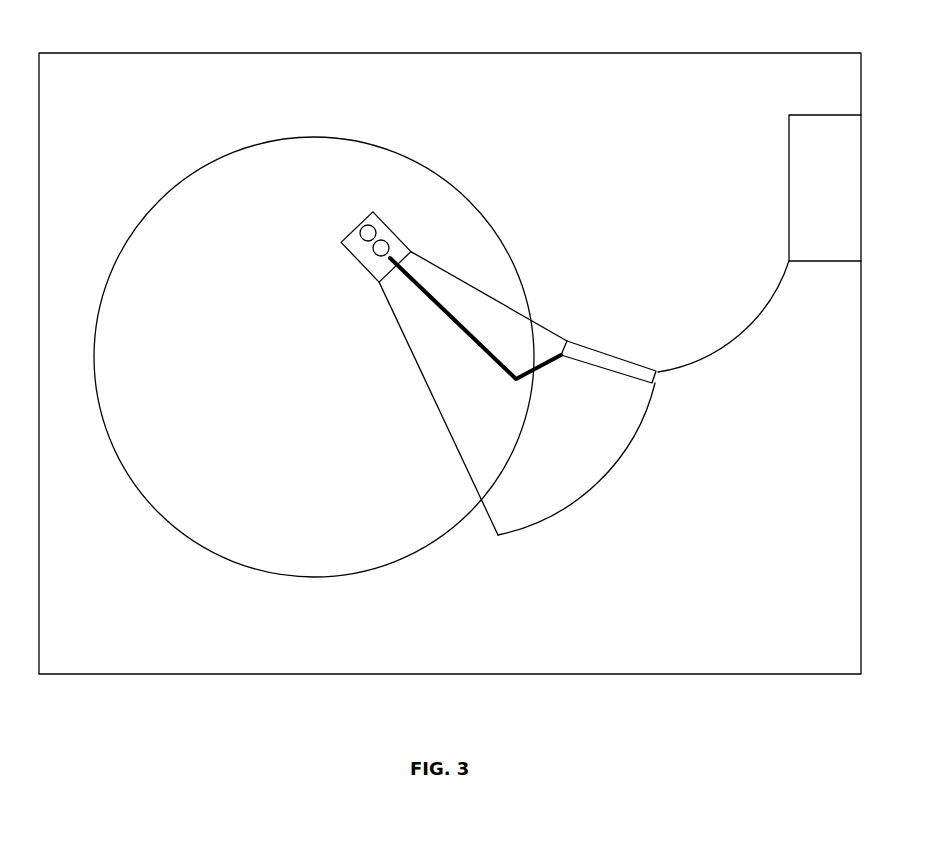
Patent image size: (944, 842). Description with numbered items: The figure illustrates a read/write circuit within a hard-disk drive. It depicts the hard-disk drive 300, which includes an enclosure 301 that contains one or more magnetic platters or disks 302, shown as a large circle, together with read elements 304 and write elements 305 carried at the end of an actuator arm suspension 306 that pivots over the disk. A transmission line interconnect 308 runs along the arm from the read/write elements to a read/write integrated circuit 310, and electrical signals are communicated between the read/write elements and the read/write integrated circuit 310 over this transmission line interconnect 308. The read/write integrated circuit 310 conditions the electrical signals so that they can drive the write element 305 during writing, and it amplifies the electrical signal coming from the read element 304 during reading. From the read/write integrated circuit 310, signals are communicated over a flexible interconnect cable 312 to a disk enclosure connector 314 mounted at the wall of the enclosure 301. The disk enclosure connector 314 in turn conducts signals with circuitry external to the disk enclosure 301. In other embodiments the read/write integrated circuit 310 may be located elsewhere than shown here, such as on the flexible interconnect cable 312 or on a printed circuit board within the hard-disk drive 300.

The hard-disk drive 300 is at (481, 36).
The enclosure 301 is at (753, 53).
The magnetic platters or disks 302 is at (455, 185).
The read elements 304 is at (358, 242).
The write elements 305 is at (387, 243).
The actuator arm suspension 306 is at (586, 493).
The transmission line interconnect 308 is at (470, 337).
The read/write integrated circuit 310 is at (600, 353).
The flexible interconnect cable 312 is at (723, 347).
The disk enclosure connector 314 is at (795, 197).